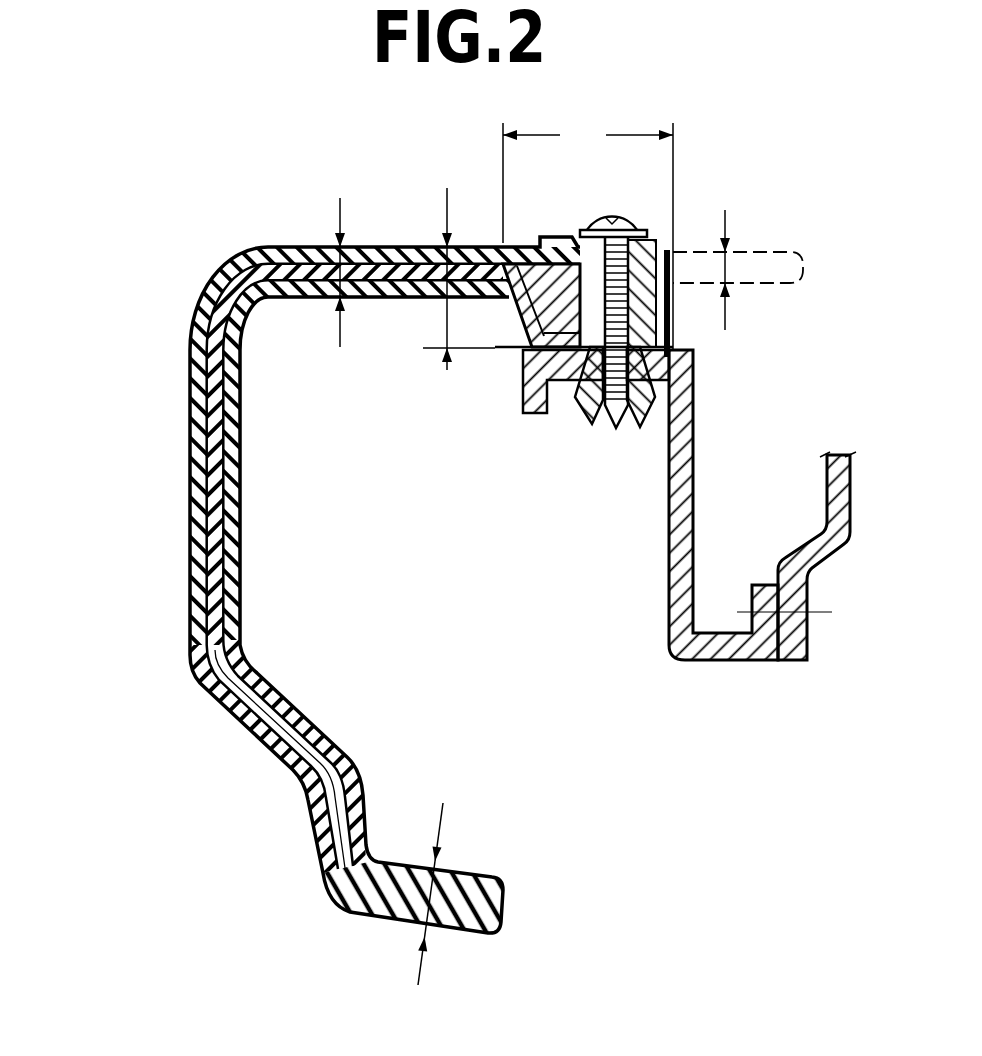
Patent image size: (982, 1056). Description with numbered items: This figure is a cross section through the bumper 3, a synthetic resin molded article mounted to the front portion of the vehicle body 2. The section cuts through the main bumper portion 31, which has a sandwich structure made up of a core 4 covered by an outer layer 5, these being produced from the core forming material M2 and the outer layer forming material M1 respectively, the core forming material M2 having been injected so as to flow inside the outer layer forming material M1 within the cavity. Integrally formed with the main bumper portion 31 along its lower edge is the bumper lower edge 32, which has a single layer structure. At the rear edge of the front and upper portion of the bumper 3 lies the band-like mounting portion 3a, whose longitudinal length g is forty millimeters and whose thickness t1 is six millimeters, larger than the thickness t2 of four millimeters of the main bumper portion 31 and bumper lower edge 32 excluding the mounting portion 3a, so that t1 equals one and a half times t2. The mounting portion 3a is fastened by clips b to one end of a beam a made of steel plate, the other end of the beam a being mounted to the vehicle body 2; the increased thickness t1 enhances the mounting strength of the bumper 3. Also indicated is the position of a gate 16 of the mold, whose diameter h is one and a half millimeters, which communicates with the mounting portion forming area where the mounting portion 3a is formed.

The vehicle body 2 is at (840, 505).
The bumper 3 is at (417, 638).
The band-like mounting portion 3a is at (675, 310).
The main bumper portion 31 is at (183, 633).
The bumper lower edge 32 is at (472, 933).
The core 4 is at (213, 542).
The outer layer 5 is at (197, 447).
The gate 16 is at (782, 282).
The beam a is at (677, 508).
The clip b is at (627, 222).
The longitudinal length of the mounting portion g is at (588, 227).
The diameter of the gate h is at (723, 273).
The thickness of the mounting portion t1 is at (443, 317).
The thickness of the main bumper portion t2 is at (457, 890).
The outer layer forming material M1 is at (230, 717).
The core forming material M2 is at (307, 745).